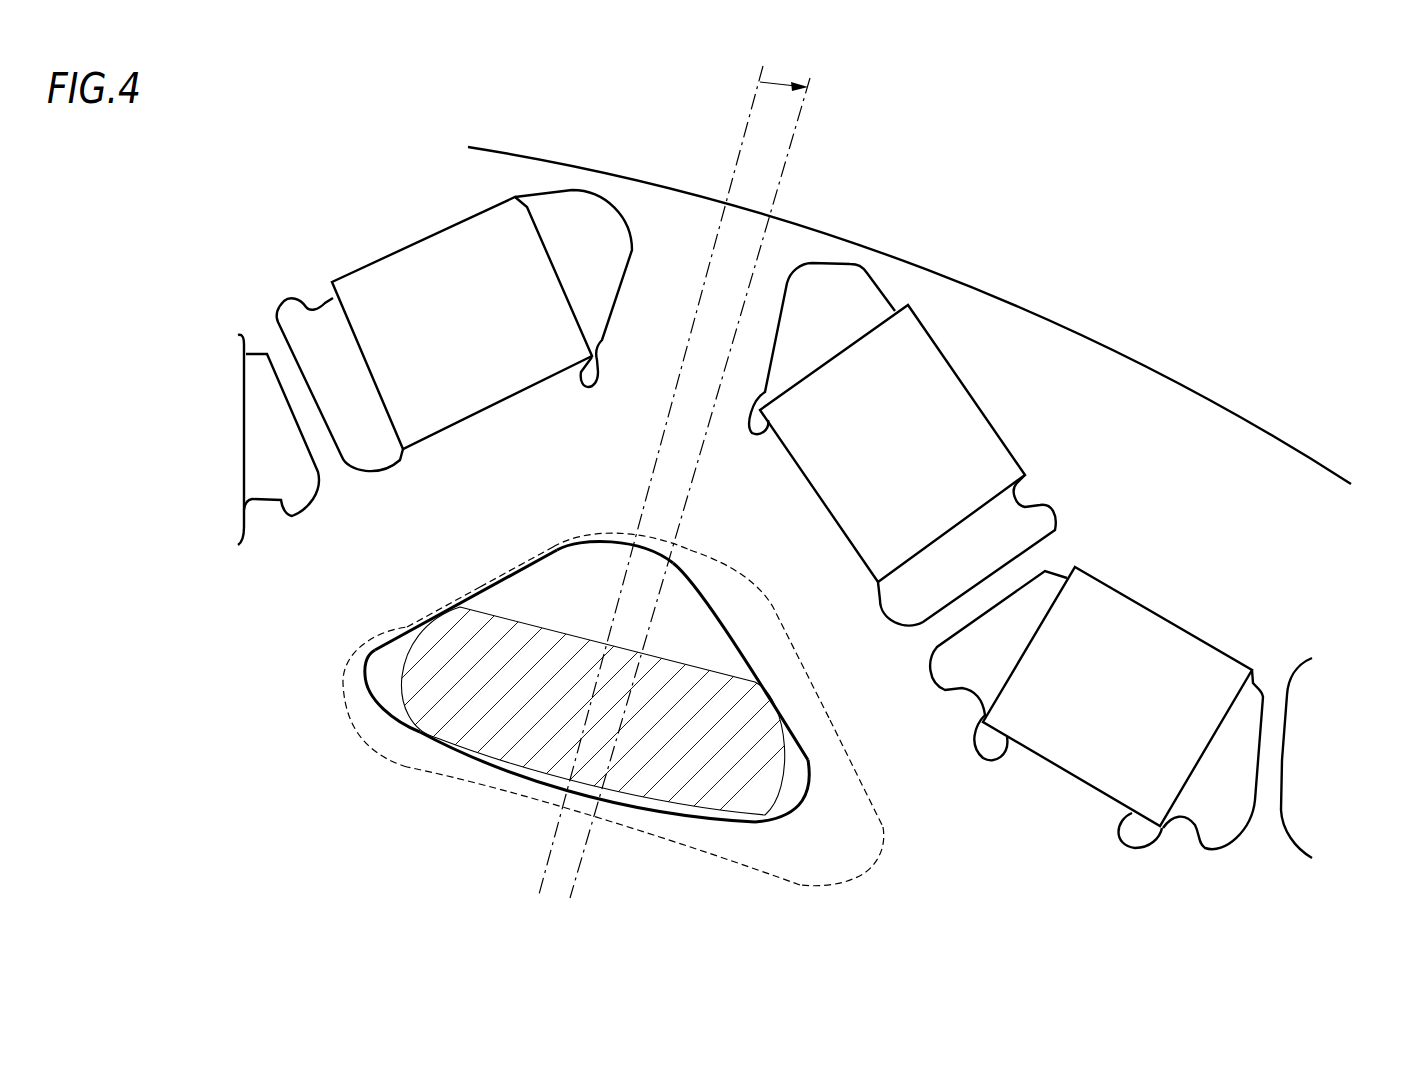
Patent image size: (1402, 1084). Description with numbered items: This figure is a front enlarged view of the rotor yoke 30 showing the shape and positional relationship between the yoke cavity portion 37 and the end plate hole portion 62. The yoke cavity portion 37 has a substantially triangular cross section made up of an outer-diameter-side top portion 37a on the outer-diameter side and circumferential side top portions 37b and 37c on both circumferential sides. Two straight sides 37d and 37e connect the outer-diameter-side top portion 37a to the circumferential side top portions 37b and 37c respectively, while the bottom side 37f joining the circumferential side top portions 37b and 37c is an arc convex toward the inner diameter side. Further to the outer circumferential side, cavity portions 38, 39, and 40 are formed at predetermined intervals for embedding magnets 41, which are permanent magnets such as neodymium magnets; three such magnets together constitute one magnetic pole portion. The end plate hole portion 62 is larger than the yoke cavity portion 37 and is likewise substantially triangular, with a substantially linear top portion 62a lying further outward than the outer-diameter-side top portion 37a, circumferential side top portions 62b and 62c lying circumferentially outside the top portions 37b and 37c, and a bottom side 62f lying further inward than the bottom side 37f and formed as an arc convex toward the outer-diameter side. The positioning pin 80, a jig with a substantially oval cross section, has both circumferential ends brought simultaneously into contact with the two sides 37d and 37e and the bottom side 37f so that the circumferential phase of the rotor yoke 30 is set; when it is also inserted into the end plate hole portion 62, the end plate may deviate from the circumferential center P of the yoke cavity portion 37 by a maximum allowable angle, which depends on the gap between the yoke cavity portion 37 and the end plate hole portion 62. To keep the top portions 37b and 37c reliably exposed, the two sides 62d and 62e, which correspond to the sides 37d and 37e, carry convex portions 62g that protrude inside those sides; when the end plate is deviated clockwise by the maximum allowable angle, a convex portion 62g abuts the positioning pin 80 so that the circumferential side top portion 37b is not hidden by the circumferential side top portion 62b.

The rotor yoke 30 is at (1153, 364).
The yoke cavity portion 37 is at (632, 666).
The outer-diameter-side top portion 37a is at (673, 540).
The circumferential side top portion 37b is at (353, 667).
The circumferential side top portion 37c is at (807, 797).
The side 37d is at (472, 598).
The side 37e is at (733, 633).
The bottom side 37f is at (621, 812).
The cavity portion 38 is at (806, 264).
The cavity portion 39 is at (1257, 737).
The cavity portion 40 is at (583, 210).
The magnet 41 is at (508, 223).
The end plate hole portion 62 is at (593, 681).
The top portion 62a is at (660, 535).
The circumferential side top portion 62b is at (343, 693).
The circumferential side top portion 62c is at (882, 868).
The side 62d is at (570, 533).
The side 62e is at (797, 643).
The bottom side 62f is at (457, 780).
The convex portion 62g is at (807, 720).
The positioning pin 80 is at (690, 783).
The circumferential center P is at (745, 128).